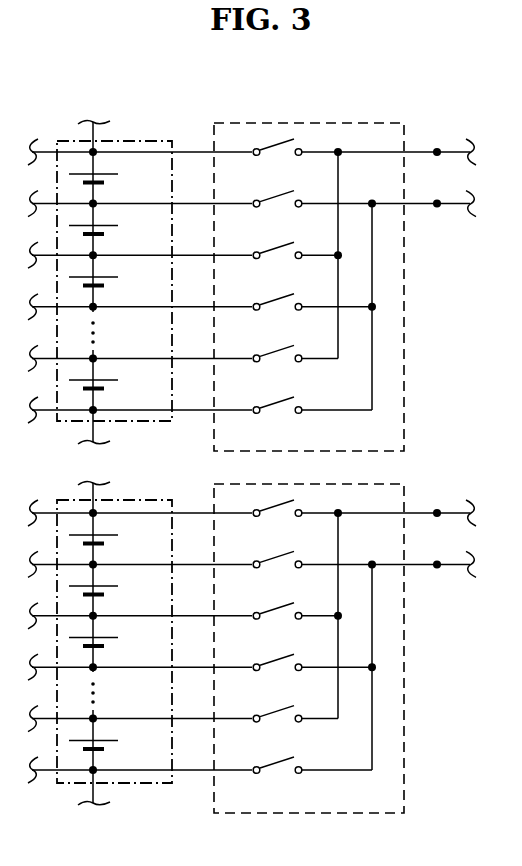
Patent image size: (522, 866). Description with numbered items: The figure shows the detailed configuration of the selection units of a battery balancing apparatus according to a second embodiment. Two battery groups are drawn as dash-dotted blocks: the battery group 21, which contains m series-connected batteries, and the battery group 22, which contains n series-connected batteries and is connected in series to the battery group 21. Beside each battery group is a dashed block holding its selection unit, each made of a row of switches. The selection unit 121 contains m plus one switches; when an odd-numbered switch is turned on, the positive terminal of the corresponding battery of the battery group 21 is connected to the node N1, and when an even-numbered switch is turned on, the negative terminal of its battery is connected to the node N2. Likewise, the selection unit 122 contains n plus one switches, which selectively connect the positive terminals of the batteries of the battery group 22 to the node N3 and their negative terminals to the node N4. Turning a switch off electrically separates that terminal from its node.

The battery group 21 is at (154, 499).
The battery group 22 is at (154, 140).
The selection unit 121 is at (358, 815).
The selection unit 122 is at (362, 123).
The node N1 is at (437, 509).
The node N2 is at (437, 560).
The node N3 is at (437, 148).
The node N4 is at (437, 200).